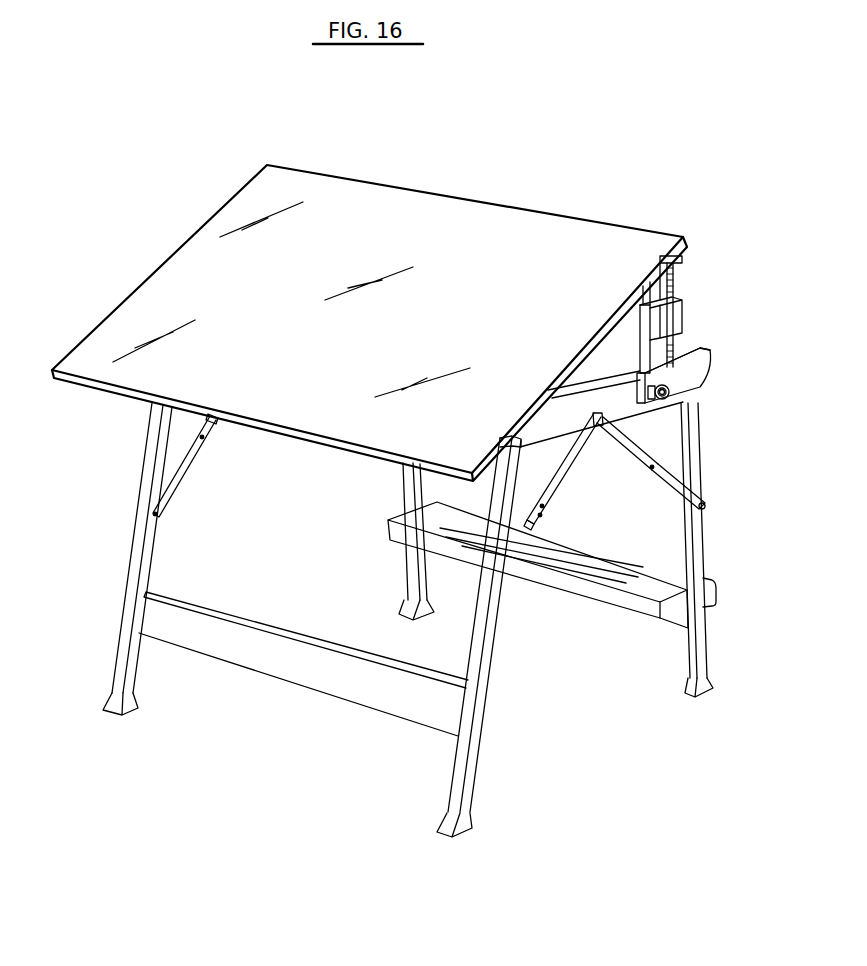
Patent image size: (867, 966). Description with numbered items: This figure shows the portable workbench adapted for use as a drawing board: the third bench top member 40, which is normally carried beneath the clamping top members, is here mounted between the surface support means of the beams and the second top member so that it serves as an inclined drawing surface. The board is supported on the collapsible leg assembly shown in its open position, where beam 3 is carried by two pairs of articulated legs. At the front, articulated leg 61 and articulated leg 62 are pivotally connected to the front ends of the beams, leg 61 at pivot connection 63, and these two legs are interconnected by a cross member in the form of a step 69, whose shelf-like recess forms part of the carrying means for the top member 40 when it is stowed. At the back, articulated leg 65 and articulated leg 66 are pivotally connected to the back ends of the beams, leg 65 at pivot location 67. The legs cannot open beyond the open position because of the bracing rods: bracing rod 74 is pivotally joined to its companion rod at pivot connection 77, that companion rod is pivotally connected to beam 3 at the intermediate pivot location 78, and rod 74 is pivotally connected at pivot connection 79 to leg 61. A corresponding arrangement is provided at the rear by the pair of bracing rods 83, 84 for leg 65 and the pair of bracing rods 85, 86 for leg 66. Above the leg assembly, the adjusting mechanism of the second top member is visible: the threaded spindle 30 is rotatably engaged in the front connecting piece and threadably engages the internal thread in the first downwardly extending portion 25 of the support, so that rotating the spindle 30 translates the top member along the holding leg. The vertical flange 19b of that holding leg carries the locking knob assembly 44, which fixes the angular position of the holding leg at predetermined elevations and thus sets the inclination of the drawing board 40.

The third bench top member 40 is at (567, 240).
The threaded spindle 30 is at (677, 282).
The first downwardly extending portion 25 is at (677, 313).
The vertical flange 19b is at (707, 358).
The beam 3 is at (700, 373).
The pivot connection 63 is at (693, 390).
The locking knob assembly 44 is at (668, 394).
The articulated leg 61 is at (694, 470).
The pivot connection 79 is at (704, 507).
The bracing rod 74 is at (670, 485).
The pivot connection 77 is at (650, 468).
The intermediate pivot location 78 is at (597, 424).
The bracing rod 84 is at (567, 474).
The bracing rod 83 is at (523, 545).
The pivot location 67 is at (520, 446).
The articulated leg 65 is at (468, 780).
The articulated leg 62 is at (410, 570).
The step 69 is at (650, 585).
The articulated leg 66 is at (147, 560).
The bracing rod 85 is at (214, 421).
The bracing rod 86 is at (181, 478).